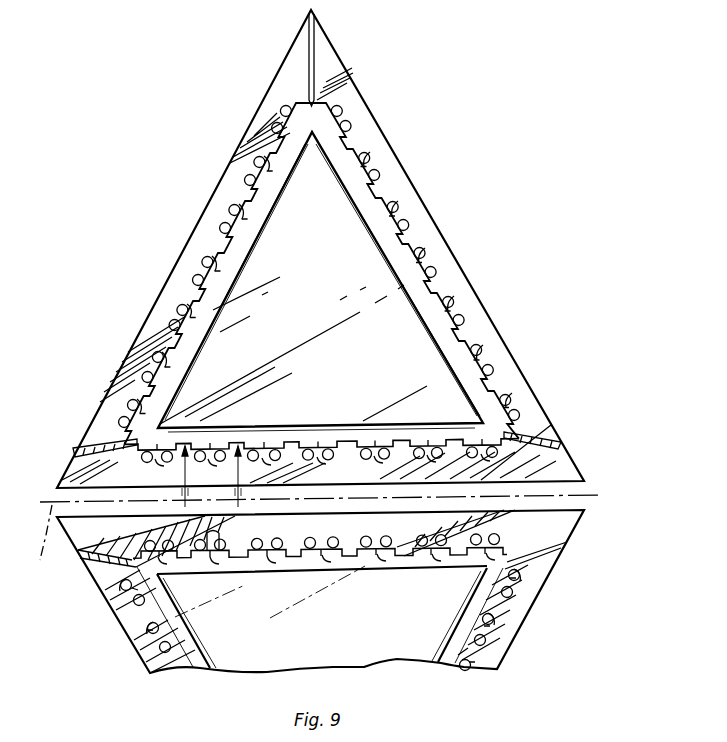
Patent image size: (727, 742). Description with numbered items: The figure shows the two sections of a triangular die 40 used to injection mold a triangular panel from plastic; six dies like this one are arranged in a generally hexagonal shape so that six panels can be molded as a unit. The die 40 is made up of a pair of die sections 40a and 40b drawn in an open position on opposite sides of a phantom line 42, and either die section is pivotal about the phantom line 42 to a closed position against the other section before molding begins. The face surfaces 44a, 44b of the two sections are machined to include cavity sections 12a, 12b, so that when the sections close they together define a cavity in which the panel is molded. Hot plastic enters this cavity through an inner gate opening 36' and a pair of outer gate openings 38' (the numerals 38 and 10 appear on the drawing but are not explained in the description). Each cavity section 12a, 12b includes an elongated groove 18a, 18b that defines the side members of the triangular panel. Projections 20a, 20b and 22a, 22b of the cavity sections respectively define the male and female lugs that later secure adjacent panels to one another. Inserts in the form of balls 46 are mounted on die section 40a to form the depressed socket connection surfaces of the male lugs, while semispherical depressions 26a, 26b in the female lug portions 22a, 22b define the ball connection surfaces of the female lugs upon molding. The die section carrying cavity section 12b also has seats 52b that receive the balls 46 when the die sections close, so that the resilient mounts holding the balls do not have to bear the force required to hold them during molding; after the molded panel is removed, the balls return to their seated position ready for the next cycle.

The inner gate opening 36' is at (348, 60).
The die section 40a is at (497, 312).
The cavity section 12a is at (388, 203).
The elongated groove 18a is at (398, 235).
The projection 20a is at (370, 154).
The projection 22a is at (247, 252).
The semispherical depression 26a is at (203, 260).
The ball 46 is at (240, 212).
The face surface 44a is at (425, 228).
The outer gate opening 38' is at (325, 494).
The corner lip 38 is at (548, 407).
The triangular die 40 is at (601, 487).
The section indicator 10 is at (200, 479).
The die section 40b is at (552, 605).
The cavity section 12b is at (500, 610).
The elongated groove 18b is at (206, 656).
The projection 20b is at (336, 585).
The projection 22b is at (160, 626).
The semispherical depression 26b is at (271, 549).
The seat 52b is at (112, 570).
The face surface 44b is at (496, 656).
The phantom line 42 is at (40, 560).